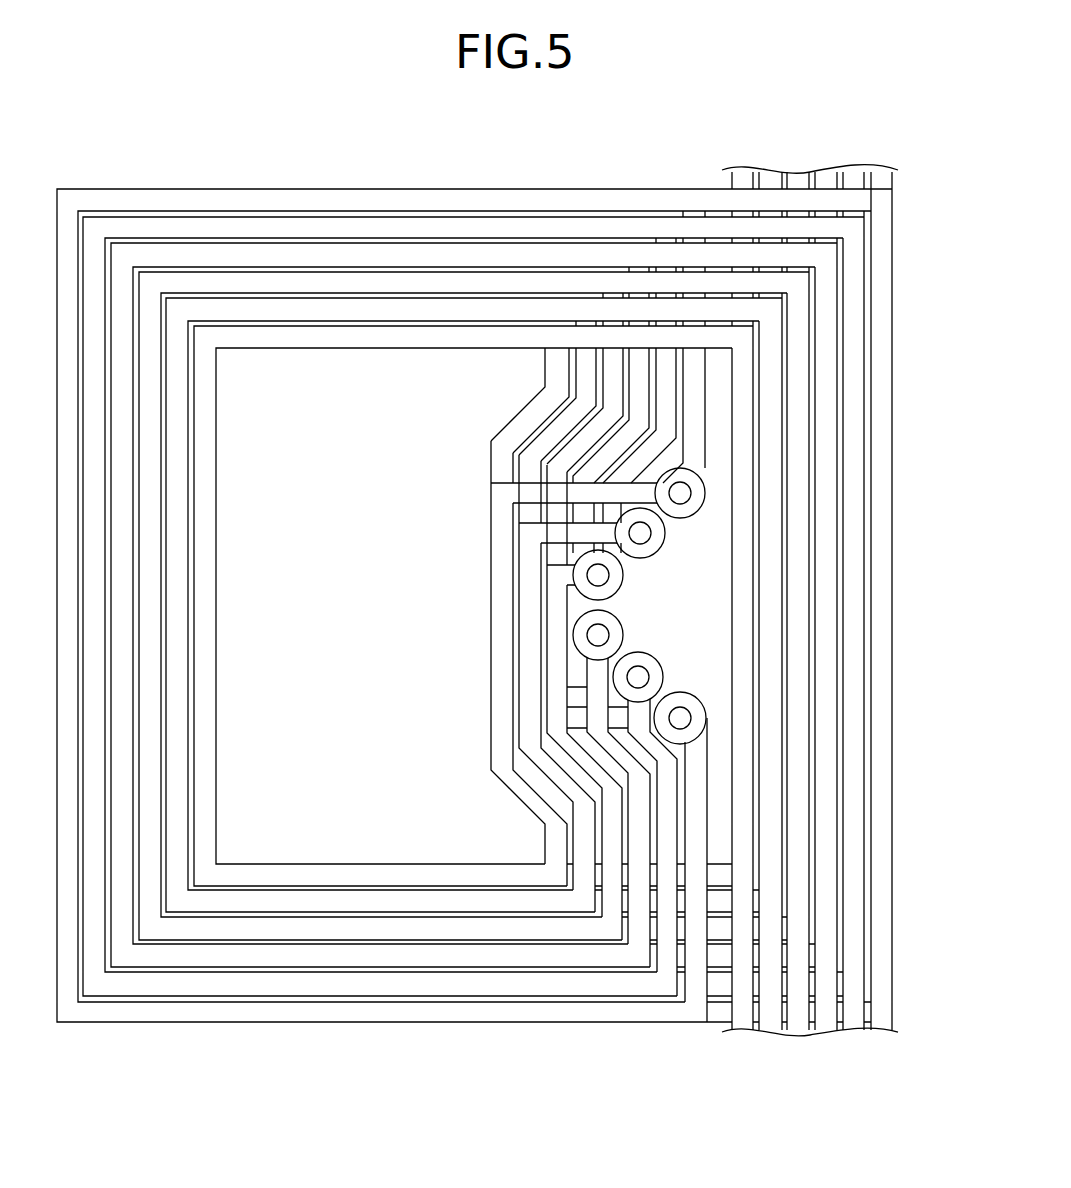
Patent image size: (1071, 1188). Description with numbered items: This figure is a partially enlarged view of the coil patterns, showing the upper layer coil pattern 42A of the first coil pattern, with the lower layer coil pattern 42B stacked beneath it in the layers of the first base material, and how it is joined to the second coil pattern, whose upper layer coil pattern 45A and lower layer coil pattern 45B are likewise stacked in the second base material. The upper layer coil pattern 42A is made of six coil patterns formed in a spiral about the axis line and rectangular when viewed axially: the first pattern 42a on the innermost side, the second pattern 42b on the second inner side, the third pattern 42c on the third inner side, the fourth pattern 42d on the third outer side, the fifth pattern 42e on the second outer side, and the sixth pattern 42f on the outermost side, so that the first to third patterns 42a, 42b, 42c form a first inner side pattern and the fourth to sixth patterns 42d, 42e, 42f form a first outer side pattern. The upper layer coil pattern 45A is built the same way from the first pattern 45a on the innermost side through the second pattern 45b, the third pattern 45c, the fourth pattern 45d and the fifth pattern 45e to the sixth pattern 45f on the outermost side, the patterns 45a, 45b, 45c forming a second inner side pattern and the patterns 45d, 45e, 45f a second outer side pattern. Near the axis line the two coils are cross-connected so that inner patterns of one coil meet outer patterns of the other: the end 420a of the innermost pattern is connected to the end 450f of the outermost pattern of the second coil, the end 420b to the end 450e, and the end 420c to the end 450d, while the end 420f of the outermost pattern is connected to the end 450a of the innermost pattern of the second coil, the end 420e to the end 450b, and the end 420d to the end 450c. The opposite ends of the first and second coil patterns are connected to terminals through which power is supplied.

The upper layer coil pattern 42A is at (477, 579).
The lower layer coil pattern 42B is at (477, 579).
The first pattern 42a is at (497, 590).
The second pattern 42b is at (527, 625).
The third pattern 42c is at (557, 655).
The fourth pattern 42d is at (608, 745).
The fifth pattern 42e is at (653, 757).
The sixth pattern 42f is at (692, 797).
The upper layer coil pattern 45A is at (668, 382).
The lower layer coil pattern 45B is at (668, 382).
The first pattern 45a is at (503, 473).
The second pattern 45b is at (530, 458).
The third pattern 45c is at (598, 430).
The fourth pattern 45d is at (638, 403).
The fifth pattern 45e is at (667, 377).
The sixth pattern 45f is at (692, 360).
The end 420a is at (734, 474).
The end 420b is at (751, 524).
The end 420c is at (765, 575).
The end 420d is at (777, 636).
The end 420e is at (798, 687).
The end 420f is at (818, 737).
The end 450a is at (694, 718).
The end 450b is at (652, 677).
The end 450c is at (612, 635).
The end 450d is at (612, 575).
The end 450e is at (654, 533).
The end 450f is at (694, 493).